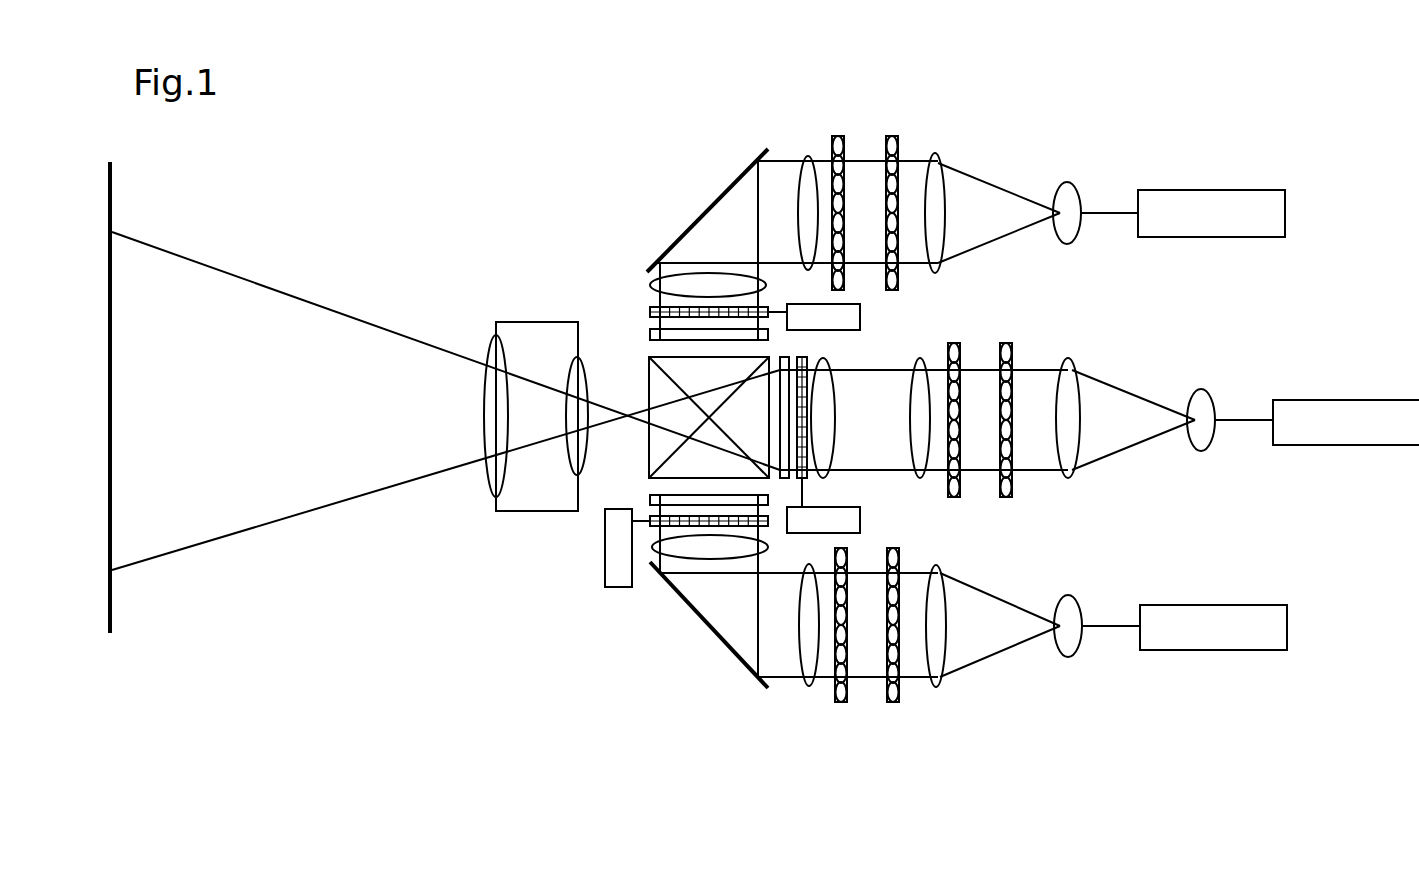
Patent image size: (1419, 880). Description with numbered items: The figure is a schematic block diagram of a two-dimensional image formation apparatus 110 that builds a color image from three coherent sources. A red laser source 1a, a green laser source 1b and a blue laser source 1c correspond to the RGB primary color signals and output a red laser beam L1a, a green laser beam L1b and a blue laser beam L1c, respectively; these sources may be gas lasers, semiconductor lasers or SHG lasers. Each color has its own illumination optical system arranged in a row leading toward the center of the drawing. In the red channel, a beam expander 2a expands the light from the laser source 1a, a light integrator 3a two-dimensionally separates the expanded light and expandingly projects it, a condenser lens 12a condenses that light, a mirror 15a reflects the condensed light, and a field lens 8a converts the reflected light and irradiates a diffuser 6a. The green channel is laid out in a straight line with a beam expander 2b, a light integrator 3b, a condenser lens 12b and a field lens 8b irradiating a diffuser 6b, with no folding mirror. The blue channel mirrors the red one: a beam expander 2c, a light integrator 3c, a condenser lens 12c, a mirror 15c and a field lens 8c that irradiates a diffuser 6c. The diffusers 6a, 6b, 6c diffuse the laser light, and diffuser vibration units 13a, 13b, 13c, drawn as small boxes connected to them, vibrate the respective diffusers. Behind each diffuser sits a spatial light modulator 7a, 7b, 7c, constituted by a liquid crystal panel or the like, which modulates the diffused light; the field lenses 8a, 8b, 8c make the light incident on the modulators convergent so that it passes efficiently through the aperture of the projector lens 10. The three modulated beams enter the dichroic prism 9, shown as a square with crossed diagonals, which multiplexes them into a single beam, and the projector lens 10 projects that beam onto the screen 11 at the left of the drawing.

The two-dimensional image formation apparatus 110 is at (1254, 716).
The screen 11 is at (113, 201).
The projector lens 10 is at (516, 320).
The dichroic prism 9 is at (650, 440).
The red laser source 1a is at (1165, 190).
The green laser source 1b is at (1302, 400).
The blue laser source 1c is at (1212, 605).
The red laser beam L1a is at (1113, 212).
The green laser beam L1b is at (1238, 420).
The blue laser beam L1c is at (1108, 626).
The beam expander 2a is at (935, 142).
The beam expander 2b is at (1058, 481).
The beam expander 2c is at (932, 690).
The light integrator 3a is at (828, 129).
The light integrator 3b is at (1018, 500).
The light integrator 3c is at (905, 706).
The condenser lens 12a is at (808, 156).
The condenser lens 12b is at (918, 358).
The condenser lens 12c is at (809, 690).
The mirror 15a is at (752, 163).
The mirror 15c is at (732, 650).
The field lens 8a is at (697, 272).
The field lens 8b is at (836, 418).
The field lens 8c is at (712, 559).
The diffuser 6a is at (652, 308).
The diffuser 6b is at (810, 478).
The diffuser 6c is at (650, 527).
The spatial light modulator 7a is at (650, 333).
The spatial light modulator 7b is at (783, 355).
The spatial light modulator 7c is at (652, 497).
The diffuser vibration unit 13a is at (862, 318).
The diffuser vibration unit 13b is at (862, 522).
The diffuser vibration unit 13c is at (617, 587).